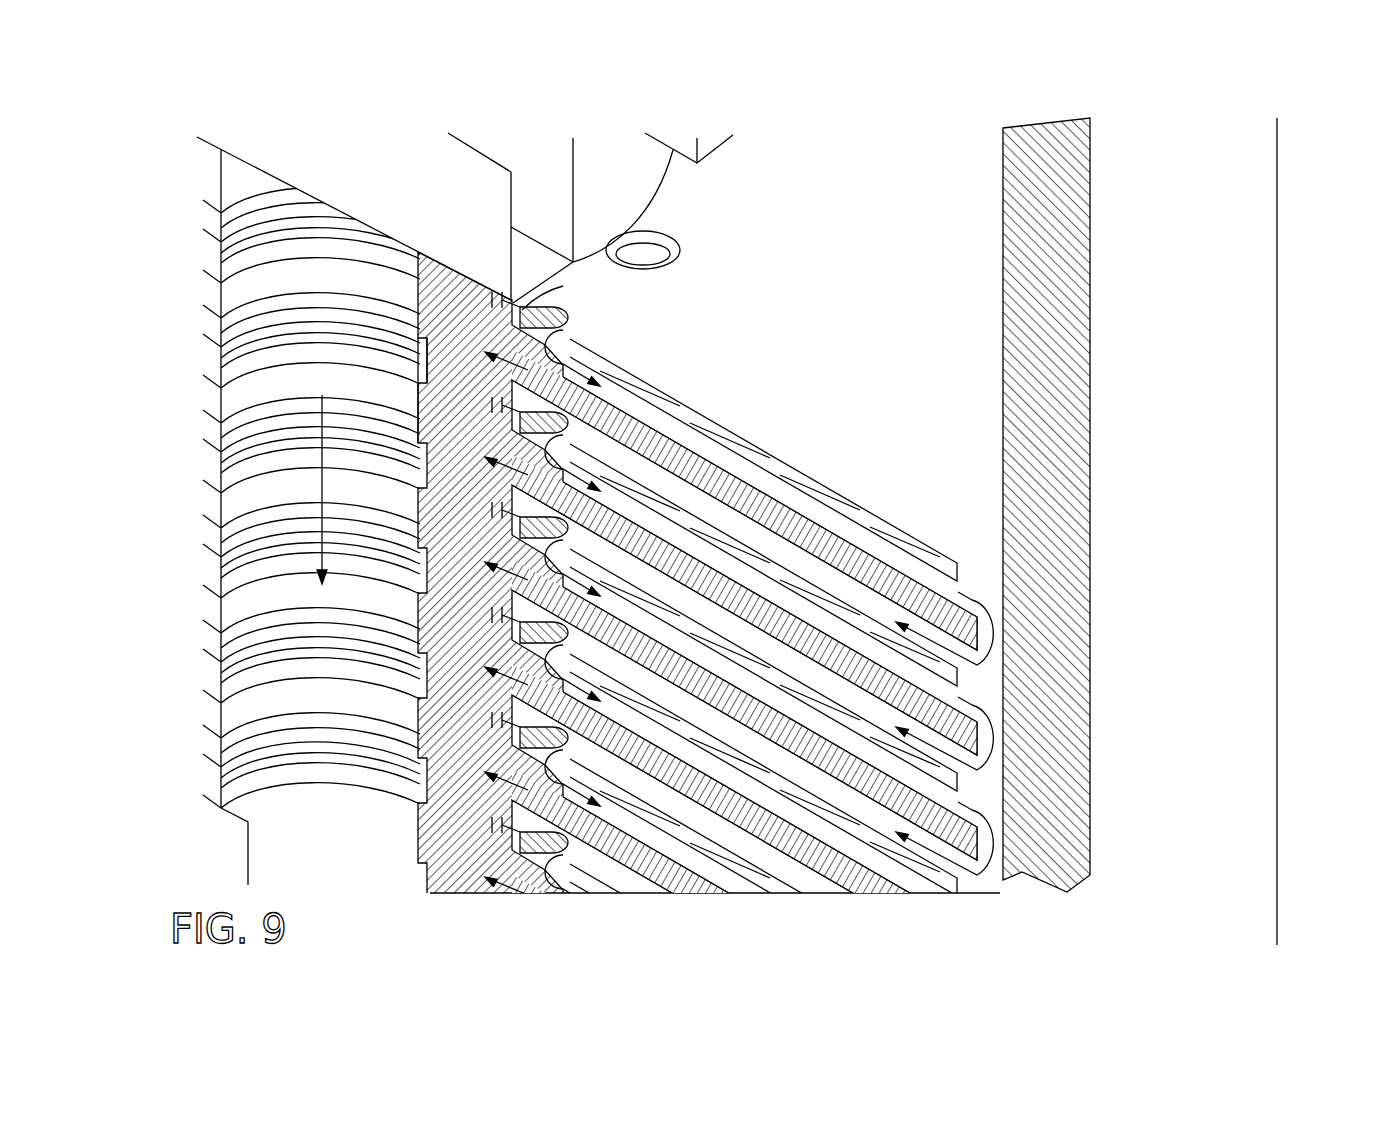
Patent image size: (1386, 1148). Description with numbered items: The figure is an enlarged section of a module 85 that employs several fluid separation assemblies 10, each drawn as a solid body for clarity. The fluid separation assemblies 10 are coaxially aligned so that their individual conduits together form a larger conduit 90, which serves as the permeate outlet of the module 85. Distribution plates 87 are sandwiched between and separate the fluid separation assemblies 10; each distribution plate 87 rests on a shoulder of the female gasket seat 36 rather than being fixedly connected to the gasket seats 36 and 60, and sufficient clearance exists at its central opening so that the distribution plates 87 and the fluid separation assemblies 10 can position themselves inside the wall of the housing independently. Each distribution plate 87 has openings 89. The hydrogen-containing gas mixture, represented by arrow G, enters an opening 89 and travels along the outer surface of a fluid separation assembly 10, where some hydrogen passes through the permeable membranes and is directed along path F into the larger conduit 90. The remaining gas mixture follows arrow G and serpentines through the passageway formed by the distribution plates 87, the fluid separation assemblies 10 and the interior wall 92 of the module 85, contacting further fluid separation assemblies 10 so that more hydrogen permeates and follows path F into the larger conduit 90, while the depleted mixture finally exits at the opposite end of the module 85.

The fluid separation assembly 10 is at (975, 596).
The gasket seat 36 is at (470, 296).
The gasket seat 60 is at (438, 350).
The module 85 is at (1282, 245).
The distribution plate 87 is at (905, 555).
The opening 89 is at (560, 324).
The larger conduit 90 is at (308, 273).
The interior wall 92 is at (1003, 232).
The path of hydrogen F is at (500, 350).
The path of gas mixture G is at (1130, 797).